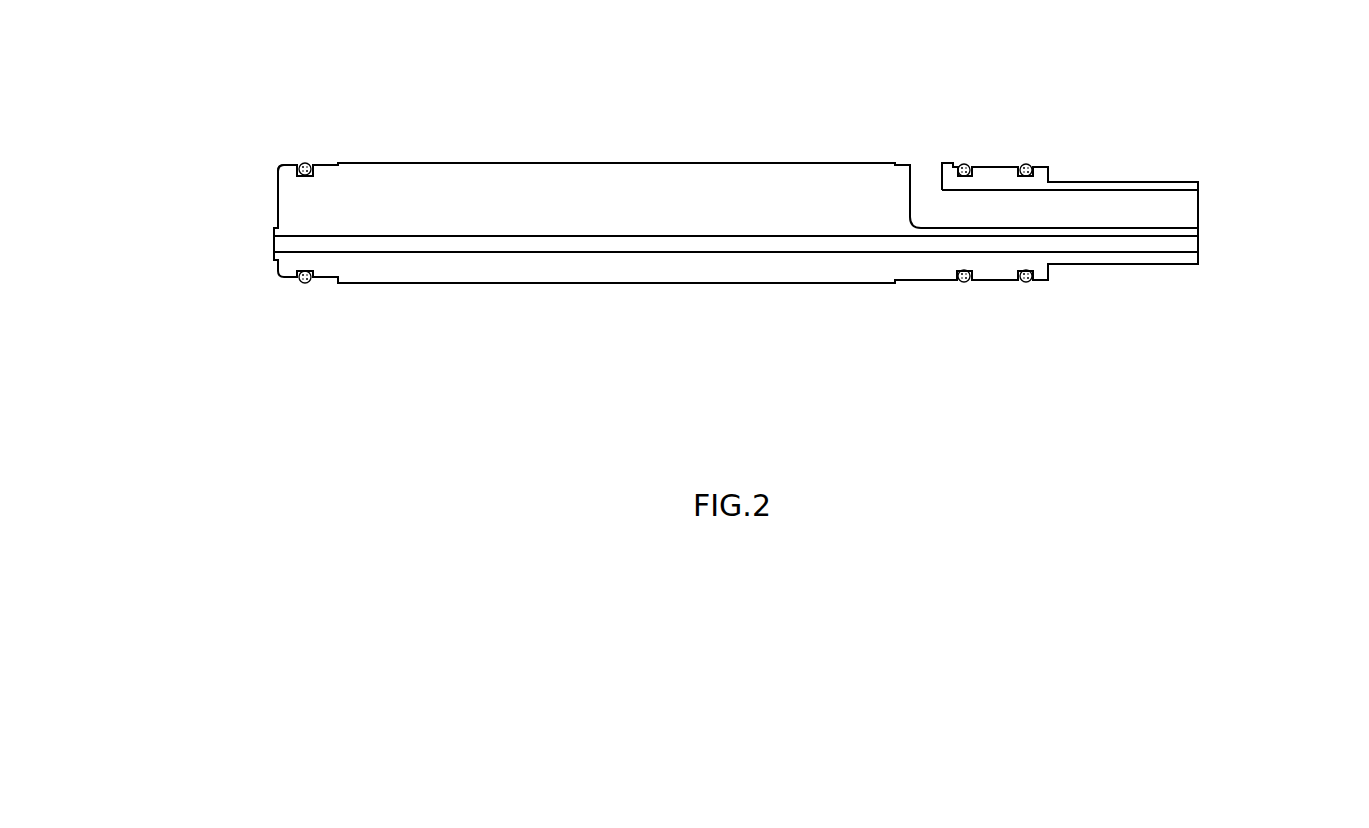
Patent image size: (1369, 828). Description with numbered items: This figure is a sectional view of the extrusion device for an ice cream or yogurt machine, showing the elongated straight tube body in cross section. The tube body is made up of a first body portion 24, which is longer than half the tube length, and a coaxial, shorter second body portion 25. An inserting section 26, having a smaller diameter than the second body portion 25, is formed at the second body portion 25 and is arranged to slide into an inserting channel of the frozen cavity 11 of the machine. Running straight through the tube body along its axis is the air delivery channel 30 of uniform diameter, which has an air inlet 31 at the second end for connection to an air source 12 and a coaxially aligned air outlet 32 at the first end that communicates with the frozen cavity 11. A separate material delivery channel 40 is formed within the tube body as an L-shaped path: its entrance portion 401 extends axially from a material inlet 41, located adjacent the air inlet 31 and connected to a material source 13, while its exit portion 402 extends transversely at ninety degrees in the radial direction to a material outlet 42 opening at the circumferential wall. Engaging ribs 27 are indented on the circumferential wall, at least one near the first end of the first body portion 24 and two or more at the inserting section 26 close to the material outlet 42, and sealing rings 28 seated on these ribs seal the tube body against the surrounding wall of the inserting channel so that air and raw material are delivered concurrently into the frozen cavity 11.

The frozen cavity 11 is at (924, 165).
The air source 12 is at (1222, 241).
The material source 13 is at (1222, 203).
The first body portion 24 is at (340, 288).
The second body portion 25 is at (1208, 330).
The inserting section 26 is at (1198, 295).
The engaging rib 27 is at (286, 150).
The sealing ring 28 is at (310, 162).
The air delivery channel 30 is at (1272, 375).
The air inlet 31 is at (1216, 263).
The air outlet 32 is at (254, 258).
The material delivery channel 40 is at (1170, 92).
The entrance portion 401 is at (1078, 202).
The exit portion 402 is at (938, 152).
The material inlet 41 is at (1213, 192).
The material outlet 42 is at (904, 140).